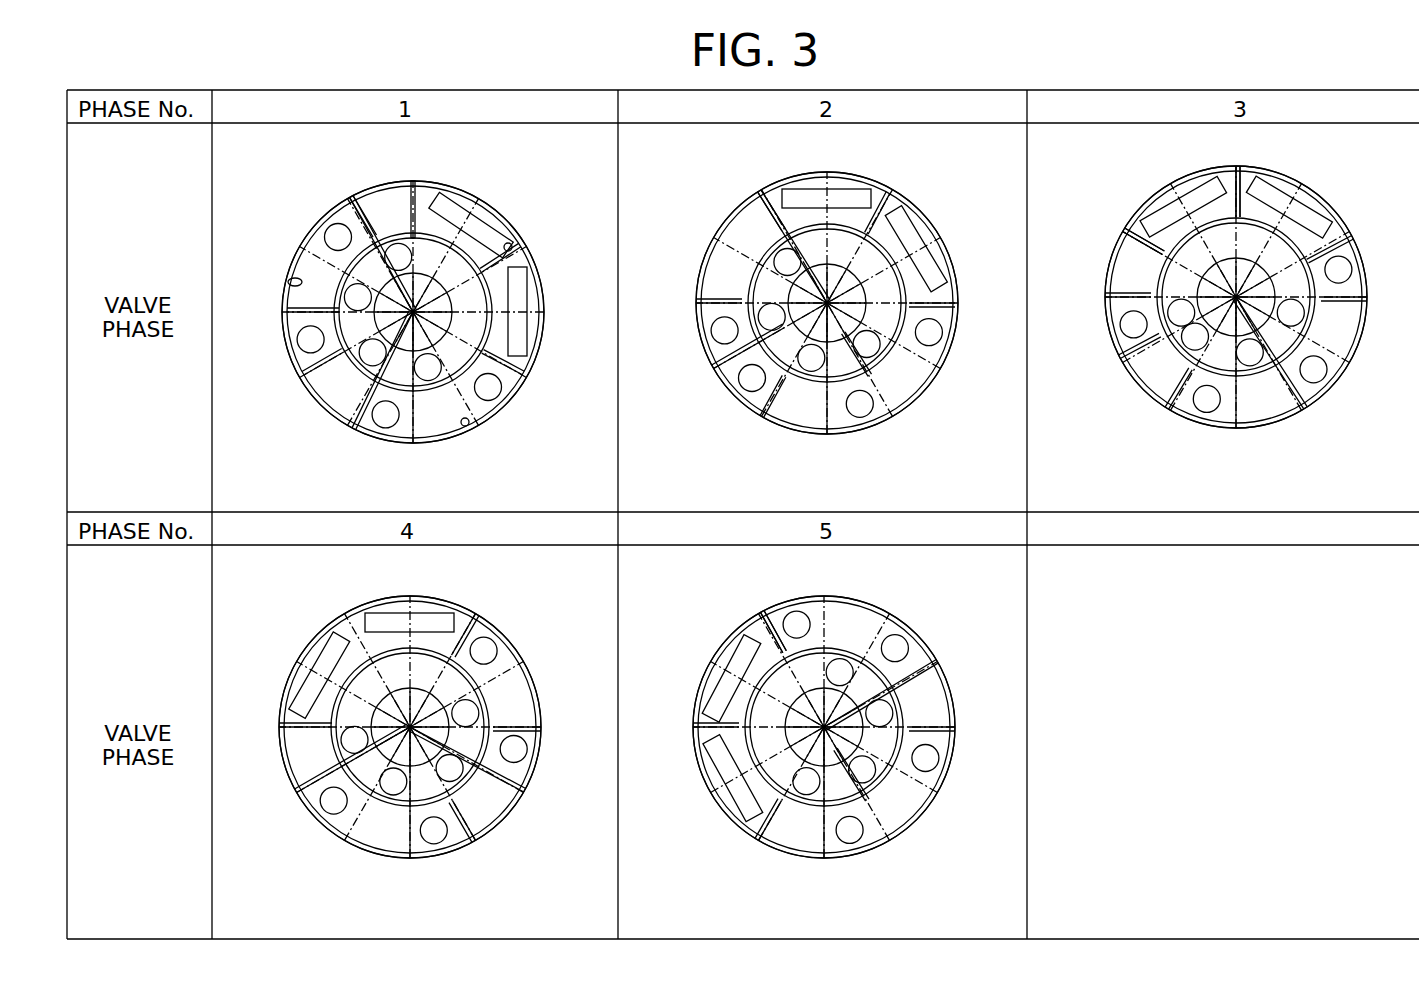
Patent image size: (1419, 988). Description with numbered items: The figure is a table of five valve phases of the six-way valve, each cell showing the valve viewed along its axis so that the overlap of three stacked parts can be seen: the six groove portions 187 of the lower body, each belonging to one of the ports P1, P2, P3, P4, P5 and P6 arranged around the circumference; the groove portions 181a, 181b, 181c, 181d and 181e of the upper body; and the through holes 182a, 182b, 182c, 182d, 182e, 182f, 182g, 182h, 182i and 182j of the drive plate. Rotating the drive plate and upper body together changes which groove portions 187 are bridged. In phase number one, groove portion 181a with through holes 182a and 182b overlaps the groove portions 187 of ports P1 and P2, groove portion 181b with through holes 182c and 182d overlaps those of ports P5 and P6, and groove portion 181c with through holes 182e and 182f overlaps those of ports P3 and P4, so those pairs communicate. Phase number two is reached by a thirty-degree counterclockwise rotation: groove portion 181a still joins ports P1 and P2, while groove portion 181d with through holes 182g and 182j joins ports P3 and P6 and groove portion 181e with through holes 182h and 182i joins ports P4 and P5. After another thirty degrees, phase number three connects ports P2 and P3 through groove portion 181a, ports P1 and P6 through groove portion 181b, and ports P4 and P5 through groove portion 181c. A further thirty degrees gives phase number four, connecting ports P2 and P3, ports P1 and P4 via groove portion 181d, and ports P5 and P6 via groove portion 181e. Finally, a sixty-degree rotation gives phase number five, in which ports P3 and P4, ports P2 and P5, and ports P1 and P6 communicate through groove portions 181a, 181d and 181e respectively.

The groove portion 187 is at (730, 428).
The port P1 is at (966, 512).
The port P2 is at (879, 404).
The port P3 is at (749, 414).
The port P4 is at (675, 512).
The port P5 is at (766, 625).
The port P6 is at (896, 611).
The groove portion 181a is at (553, 230).
The groove portion 181b is at (493, 451).
The groove portion 181c is at (259, 277).
The groove portion 181d is at (945, 249).
The groove portion 181e is at (707, 380).
The through hole 182a is at (491, 219).
The through hole 182b is at (558, 311).
The through hole 182c is at (527, 412).
The through hole 182d is at (405, 443).
The through hole 182e is at (270, 332).
The through hole 182f is at (326, 208).
The through hole 182g is at (759, 214).
The through hole 182h is at (680, 302).
The through hole 182i is at (750, 396).
The through hole 182j is at (895, 392).